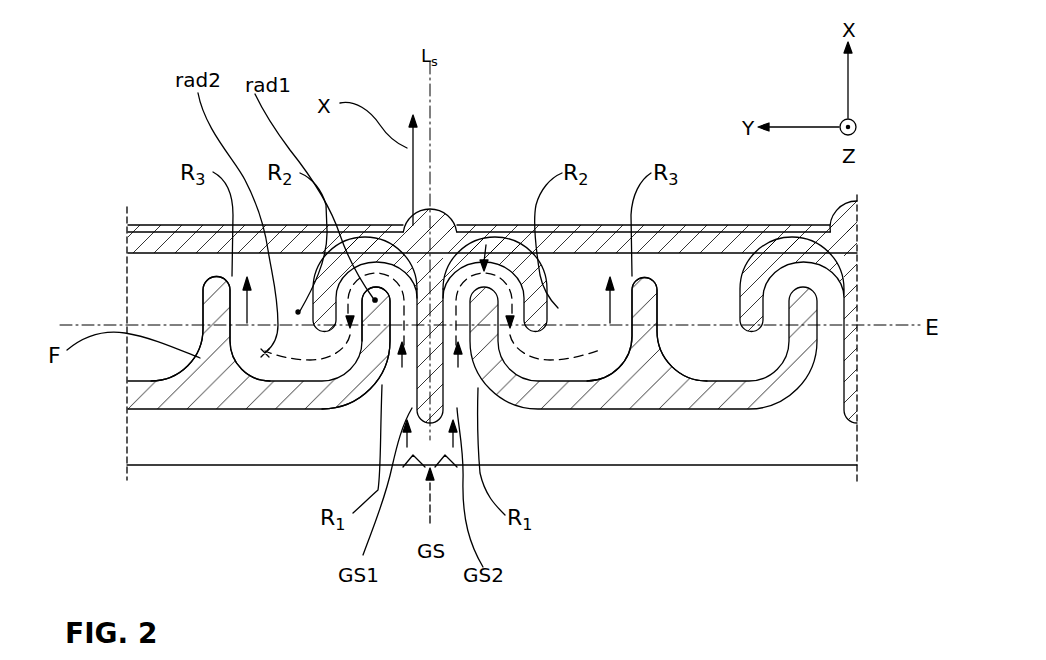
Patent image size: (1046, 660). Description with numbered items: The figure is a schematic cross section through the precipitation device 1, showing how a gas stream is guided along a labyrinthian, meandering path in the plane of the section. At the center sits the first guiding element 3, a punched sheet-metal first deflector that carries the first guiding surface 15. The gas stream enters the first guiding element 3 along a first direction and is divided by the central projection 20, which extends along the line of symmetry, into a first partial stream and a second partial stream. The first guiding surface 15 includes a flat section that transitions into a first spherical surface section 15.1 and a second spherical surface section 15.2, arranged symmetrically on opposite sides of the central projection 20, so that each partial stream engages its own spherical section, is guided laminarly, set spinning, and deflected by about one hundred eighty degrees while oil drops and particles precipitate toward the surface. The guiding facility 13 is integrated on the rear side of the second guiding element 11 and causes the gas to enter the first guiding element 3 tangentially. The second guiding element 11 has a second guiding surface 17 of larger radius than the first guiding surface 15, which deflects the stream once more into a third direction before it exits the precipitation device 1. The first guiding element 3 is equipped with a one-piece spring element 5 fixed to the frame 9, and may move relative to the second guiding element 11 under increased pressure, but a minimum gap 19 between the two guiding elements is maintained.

The precipitation device 1 is at (888, 186).
The first guiding element 3 is at (398, 245).
The spring element 5 is at (444, 207).
The frame 9 is at (783, 443).
The second guiding element 11 is at (231, 408).
The guiding facility 13 is at (322, 412).
The first guiding surface 15 is at (442, 249).
The first spherical surface section 15.1 is at (368, 258).
The second spherical surface section 15.2 is at (512, 255).
The second guiding surface 17 is at (617, 412).
The minimum gap 19 is at (487, 240).
The central projection 20 is at (378, 490).